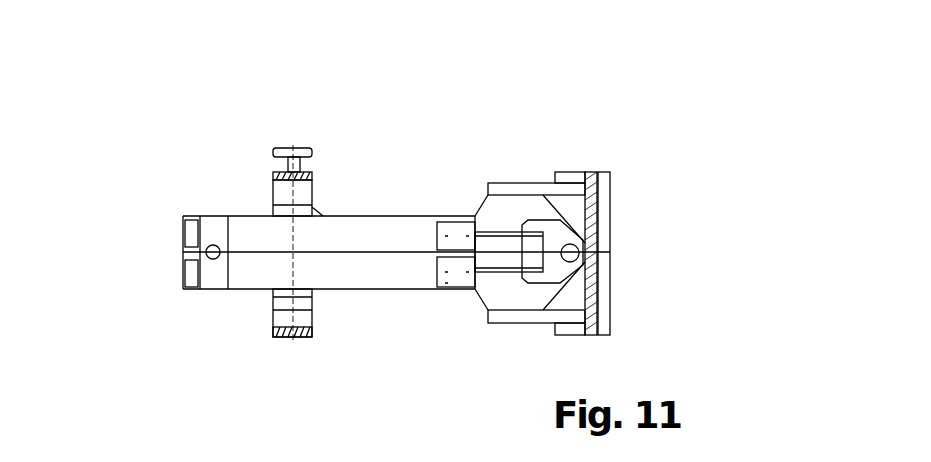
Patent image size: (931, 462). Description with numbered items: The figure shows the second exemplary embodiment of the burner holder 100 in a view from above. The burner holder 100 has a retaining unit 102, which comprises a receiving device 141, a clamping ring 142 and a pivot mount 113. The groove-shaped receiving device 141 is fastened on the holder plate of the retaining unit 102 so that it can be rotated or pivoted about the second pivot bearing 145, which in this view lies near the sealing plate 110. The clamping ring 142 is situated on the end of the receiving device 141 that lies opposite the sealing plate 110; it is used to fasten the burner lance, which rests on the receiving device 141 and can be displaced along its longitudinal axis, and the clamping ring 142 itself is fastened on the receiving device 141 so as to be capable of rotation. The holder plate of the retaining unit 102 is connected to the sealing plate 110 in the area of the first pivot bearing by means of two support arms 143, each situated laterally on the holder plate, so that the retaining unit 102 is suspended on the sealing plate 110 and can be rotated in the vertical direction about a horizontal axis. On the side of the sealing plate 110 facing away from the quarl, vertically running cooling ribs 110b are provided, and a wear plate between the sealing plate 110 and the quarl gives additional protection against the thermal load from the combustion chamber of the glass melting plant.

The burner holder 100 is at (369, 131).
The retaining unit 102 is at (148, 257).
The pivot mount 113 is at (278, 193).
The receiving device 141 is at (390, 218).
The clamping ring 142 is at (212, 232).
The support arms 143 is at (519, 186).
The cooling ribs 110b is at (590, 205).
The sealing plate 110 is at (608, 218).
The second pivot bearing 145 is at (575, 253).